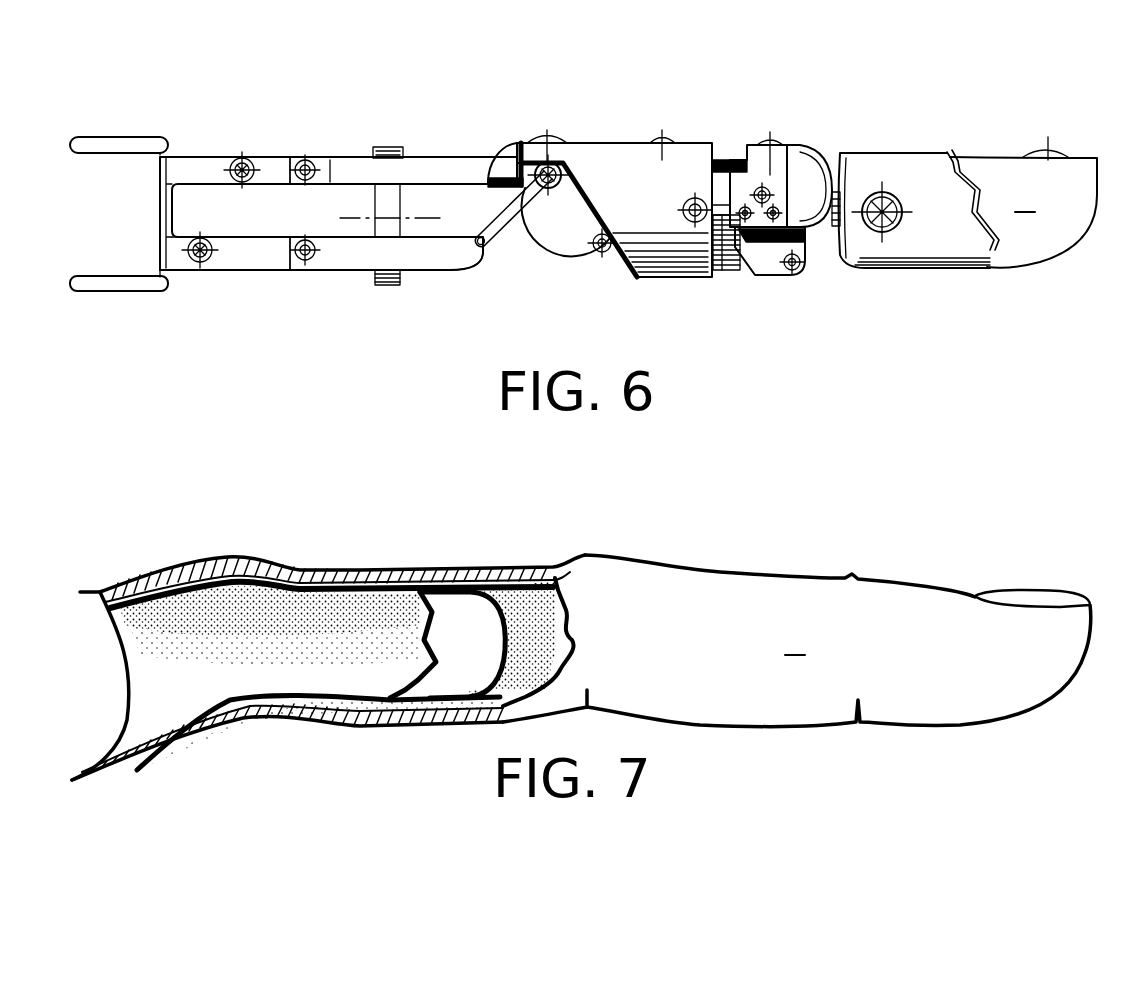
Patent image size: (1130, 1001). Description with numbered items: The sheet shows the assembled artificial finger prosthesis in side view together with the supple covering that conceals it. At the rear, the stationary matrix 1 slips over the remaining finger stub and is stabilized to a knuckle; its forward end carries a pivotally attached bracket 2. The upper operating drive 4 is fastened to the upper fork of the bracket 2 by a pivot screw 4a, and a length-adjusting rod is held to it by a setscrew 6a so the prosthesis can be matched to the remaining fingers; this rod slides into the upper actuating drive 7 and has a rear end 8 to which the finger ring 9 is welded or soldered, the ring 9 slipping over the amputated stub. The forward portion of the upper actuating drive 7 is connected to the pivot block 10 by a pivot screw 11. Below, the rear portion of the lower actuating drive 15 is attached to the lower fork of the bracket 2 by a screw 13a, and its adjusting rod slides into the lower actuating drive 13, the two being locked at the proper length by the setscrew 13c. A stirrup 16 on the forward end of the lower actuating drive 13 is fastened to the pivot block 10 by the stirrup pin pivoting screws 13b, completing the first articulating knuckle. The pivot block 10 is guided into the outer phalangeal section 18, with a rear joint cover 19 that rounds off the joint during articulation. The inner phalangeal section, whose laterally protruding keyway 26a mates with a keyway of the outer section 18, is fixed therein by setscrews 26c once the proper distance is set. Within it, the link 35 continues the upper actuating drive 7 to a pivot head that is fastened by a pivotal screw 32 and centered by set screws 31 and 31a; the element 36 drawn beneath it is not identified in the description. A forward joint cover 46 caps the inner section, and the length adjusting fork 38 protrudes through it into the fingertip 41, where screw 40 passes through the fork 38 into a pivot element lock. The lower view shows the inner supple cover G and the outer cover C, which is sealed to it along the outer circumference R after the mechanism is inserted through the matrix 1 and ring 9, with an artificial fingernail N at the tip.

In FIG. 6, the stationary matrix 1 is at (105, 137).
In FIG. 6, the bracket 2 is at (195, 160).
In FIG. 6, the upper operating drive 4 is at (272, 160).
In FIG. 6, the pivot screw 4a is at (242, 165).
In FIG. 6, the rear end 8 is at (290, 160).
In FIG. 6, the setscrew 6a is at (308, 164).
In FIG. 6, the finger ring 9 is at (390, 147).
In FIG. 6, the upper actuating drive 7 is at (437, 160).
In FIG. 6, the rear joint cover 19 is at (510, 150).
In FIG. 6, the stirrup pin pivoting screws 13b is at (555, 163).
In FIG. 6, the outer phalangeal section 18 is at (620, 150).
In FIG. 6, the setscrews 26c is at (695, 205).
In FIG. 6, the set screw 31a is at (745, 210).
In FIG. 6, the pivotal screw 32 is at (765, 190).
In FIG. 6, the set screw 31 is at (777, 210).
In FIG. 6, the forward joint cover 46 is at (838, 205).
In FIG. 6, the screw 40 is at (885, 200).
In FIG. 6, the screw 13a is at (200, 257).
In FIG. 6, the rear portion of the lower actuating drive 15 is at (250, 258).
In FIG. 6, the setscrew 13c is at (307, 257).
In FIG. 6, the lower actuating drive 13 is at (430, 253).
In FIG. 6, the stirrup 16 is at (505, 222).
In FIG. 6, the pivot block 10 is at (555, 217).
In FIG. 6, the pivot screw 11 is at (597, 246).
In FIG. 6, the keyway 26a is at (722, 265).
In FIG. 6, the link 35 is at (765, 262).
In FIG. 6, the screw 36 is at (795, 265).
In FIG. 6, the length adjusting fork 38 is at (848, 250).
In FIG. 6, the fingertip 41 is at (935, 220).
In FIG. 7, the outer circumference R is at (90, 590).
In FIG. 7, the inner supple cover G is at (468, 623).
In FIG. 7, the cover C is at (797, 641).
In FIG. 7, the artificial fingernail N is at (1043, 600).